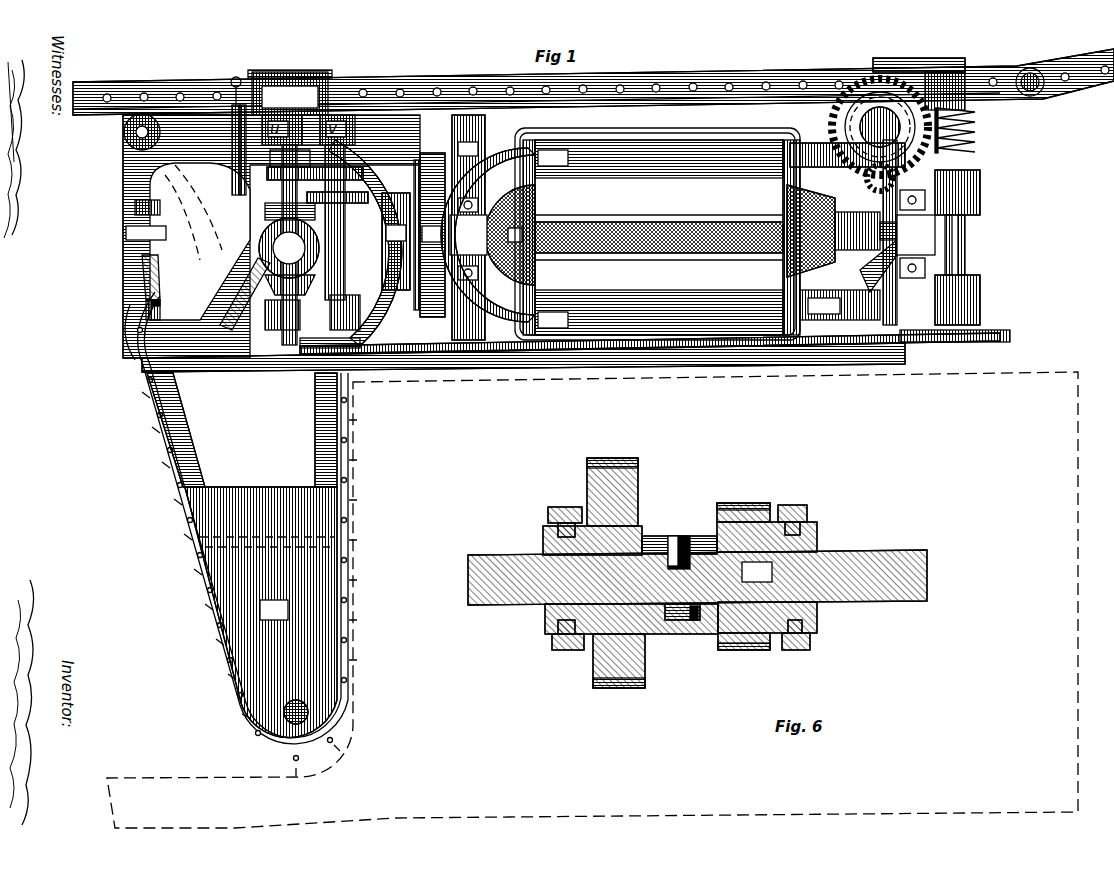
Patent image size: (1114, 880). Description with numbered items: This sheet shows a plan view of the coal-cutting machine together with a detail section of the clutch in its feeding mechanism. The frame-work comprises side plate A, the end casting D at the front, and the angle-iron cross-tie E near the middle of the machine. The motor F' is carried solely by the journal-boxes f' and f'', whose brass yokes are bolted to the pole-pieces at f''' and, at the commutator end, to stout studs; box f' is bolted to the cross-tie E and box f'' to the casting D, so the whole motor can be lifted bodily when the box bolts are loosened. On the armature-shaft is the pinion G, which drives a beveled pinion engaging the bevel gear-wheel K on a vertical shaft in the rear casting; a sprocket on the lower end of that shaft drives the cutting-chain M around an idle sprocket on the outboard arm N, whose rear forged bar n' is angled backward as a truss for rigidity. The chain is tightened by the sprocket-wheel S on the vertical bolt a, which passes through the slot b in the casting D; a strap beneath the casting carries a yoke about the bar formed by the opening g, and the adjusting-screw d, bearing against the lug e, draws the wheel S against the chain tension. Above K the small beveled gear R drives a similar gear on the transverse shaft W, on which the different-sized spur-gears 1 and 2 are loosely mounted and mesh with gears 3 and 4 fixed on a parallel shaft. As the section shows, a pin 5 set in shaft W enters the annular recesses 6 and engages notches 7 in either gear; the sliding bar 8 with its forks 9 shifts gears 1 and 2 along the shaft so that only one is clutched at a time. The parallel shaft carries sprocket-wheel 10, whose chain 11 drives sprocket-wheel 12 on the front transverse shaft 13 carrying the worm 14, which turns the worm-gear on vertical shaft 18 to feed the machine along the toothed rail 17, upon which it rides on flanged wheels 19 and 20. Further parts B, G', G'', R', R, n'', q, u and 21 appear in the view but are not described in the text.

In FIG. 1, the spur-gear 1 is at (243, 110).
In FIG. 6, the spur-gear 1 is at (630, 573).
In FIG. 1, the spur-gear 2 is at (236, 110).
In FIG. 6, the spur-gear 2 is at (767, 576).
In FIG. 1, the spur-gear 3 is at (355, 166).
In FIG. 1, the spur-gear 4 is at (368, 195).
In FIG. 6, the pin 5 is at (683, 538).
In FIG. 6, the annular recess 6 is at (672, 622).
In FIG. 6, the notch 7 is at (648, 546).
In FIG. 1, the longitudinally-sliding bar 8 is at (238, 78).
In FIG. 6, the fork 9 is at (797, 665).
In FIG. 1, the sprocket-wheel 10 is at (350, 345).
In FIG. 1, the chain 11 is at (630, 348).
In FIG. 1, the sprocket-wheel 12 is at (958, 342).
In FIG. 1, the transverse shaft 13 is at (962, 248).
In FIG. 1, the worm 14 is at (975, 150).
In FIG. 1, the toothed rail 17 is at (790, 95).
In FIG. 1, the vertical shaft 18 is at (878, 118).
In FIG. 1, the flanged wheel 19 is at (919, 84).
In FIG. 1, the flanged wheel 20 is at (290, 92).
In FIG. 1, the pivoted arm 21 is at (1030, 92).
In FIG. 1, the side plate A is at (620, 230).
In FIG. 1, the base bar B is at (520, 366).
In FIG. 1, the cross-connecting casting D is at (502, 236).
In FIG. 1, the cross-tie E is at (468, 227).
In FIG. 1, the motor F' is at (661, 237).
In FIG. 1, the pinion G is at (432, 235).
In FIG. 1, the worm G' is at (427, 220).
In FIG. 1, the worm wheel G'' is at (396, 241).
In FIG. 1, the bevel gear-wheel K is at (351, 310).
In FIG. 1, the cutting-chain M is at (186, 542).
In FIG. 1, the outboard arm N is at (255, 463).
In FIG. 1, the beveled gear R is at (289, 245).
In FIG. 1, the armature shaft R' is at (659, 237).
In FIG. 1, the sprocket-wheel S is at (128, 322).
In FIG. 6, the transverse shaft W is at (697, 577).
In FIG. 1, the bolt a is at (146, 305).
In FIG. 1, the slot b is at (142, 262).
In FIG. 1, the adjusting-screw d is at (135, 207).
In FIG. 1, the lug e is at (126, 233).
In FIG. 1, the journal-box f' is at (468, 239).
In FIG. 1, the journal-box f'' is at (916, 234).
In FIG. 1, the yoke bolting point f''' is at (709, 239).
In FIG. 1, the opening g is at (200, 241).
In FIG. 1, the forged bar n' is at (242, 430).
In FIG. 1, the frame plate n'' is at (261, 612).
In FIG. 1, the shaft q is at (329, 222).
In FIG. 1, the clutch block u is at (260, 294).